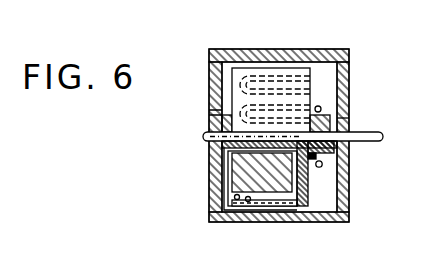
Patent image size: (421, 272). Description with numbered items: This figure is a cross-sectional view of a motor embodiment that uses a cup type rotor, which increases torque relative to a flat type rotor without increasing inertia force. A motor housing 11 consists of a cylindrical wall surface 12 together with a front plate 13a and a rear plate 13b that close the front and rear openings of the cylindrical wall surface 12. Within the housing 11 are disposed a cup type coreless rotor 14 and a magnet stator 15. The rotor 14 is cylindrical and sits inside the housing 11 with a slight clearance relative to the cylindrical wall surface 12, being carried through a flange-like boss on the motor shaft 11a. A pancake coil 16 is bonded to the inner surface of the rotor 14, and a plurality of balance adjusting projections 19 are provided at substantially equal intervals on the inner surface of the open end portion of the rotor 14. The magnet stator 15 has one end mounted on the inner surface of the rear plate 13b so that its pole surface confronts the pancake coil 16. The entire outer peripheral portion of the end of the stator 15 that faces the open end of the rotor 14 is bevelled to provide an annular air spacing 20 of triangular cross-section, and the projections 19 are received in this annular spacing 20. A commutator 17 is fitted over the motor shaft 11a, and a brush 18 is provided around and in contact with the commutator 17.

The motor housing 11 is at (386, 54).
The motor shaft 11a is at (358, 132).
The cylindrical wall surface 12 is at (282, 49).
The front plate 13a is at (349, 74).
The rear plate 13b is at (210, 92).
The cup type coreless rotor 14 is at (268, 207).
The magnet stator 15 is at (240, 172).
The pancake coil 16 is at (242, 208).
The commutator 17 is at (322, 165).
The brush 18 is at (318, 170).
The balance adjusting projections 19 is at (236, 199).
The annular air spacing 20 is at (229, 195).